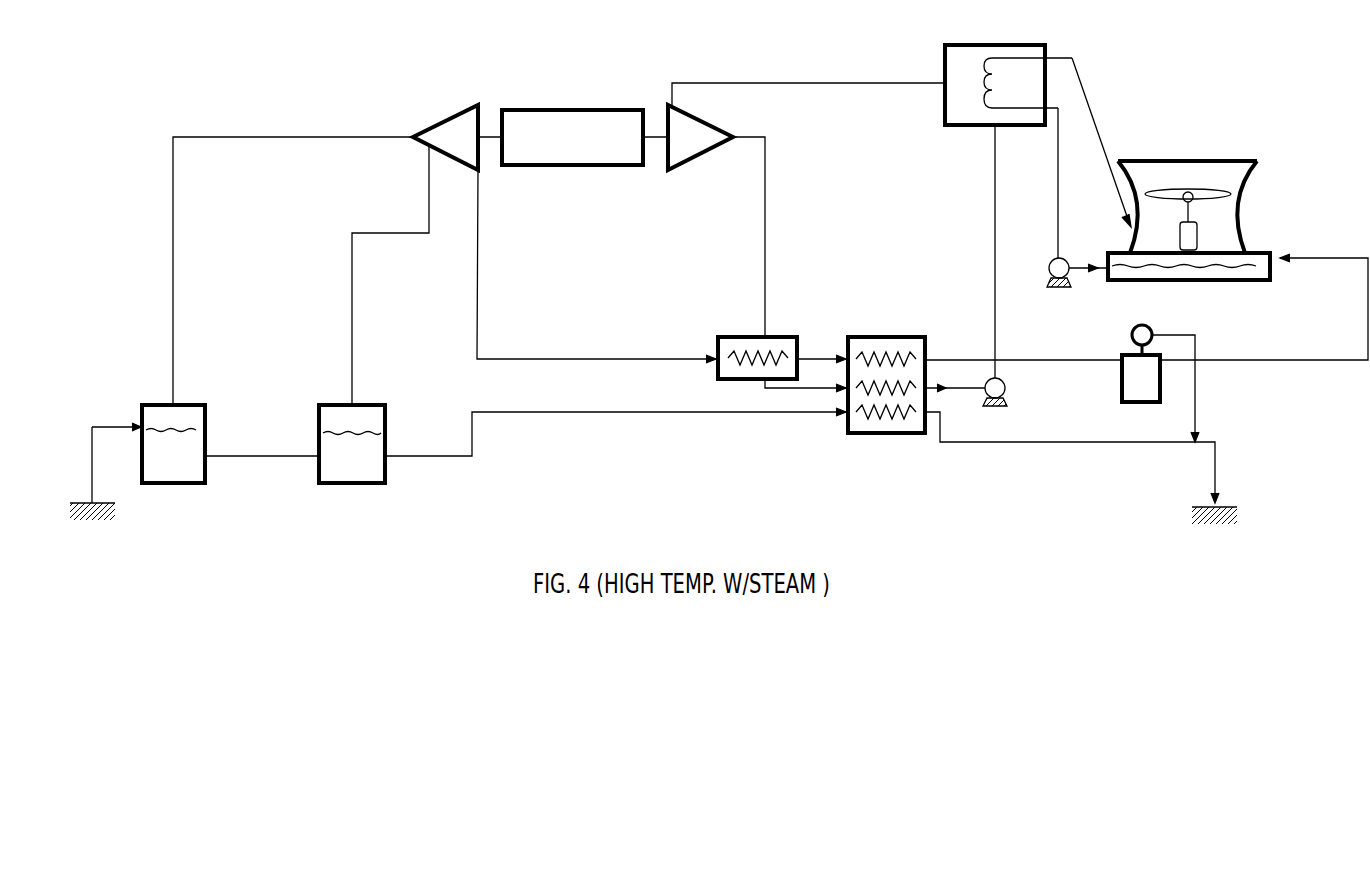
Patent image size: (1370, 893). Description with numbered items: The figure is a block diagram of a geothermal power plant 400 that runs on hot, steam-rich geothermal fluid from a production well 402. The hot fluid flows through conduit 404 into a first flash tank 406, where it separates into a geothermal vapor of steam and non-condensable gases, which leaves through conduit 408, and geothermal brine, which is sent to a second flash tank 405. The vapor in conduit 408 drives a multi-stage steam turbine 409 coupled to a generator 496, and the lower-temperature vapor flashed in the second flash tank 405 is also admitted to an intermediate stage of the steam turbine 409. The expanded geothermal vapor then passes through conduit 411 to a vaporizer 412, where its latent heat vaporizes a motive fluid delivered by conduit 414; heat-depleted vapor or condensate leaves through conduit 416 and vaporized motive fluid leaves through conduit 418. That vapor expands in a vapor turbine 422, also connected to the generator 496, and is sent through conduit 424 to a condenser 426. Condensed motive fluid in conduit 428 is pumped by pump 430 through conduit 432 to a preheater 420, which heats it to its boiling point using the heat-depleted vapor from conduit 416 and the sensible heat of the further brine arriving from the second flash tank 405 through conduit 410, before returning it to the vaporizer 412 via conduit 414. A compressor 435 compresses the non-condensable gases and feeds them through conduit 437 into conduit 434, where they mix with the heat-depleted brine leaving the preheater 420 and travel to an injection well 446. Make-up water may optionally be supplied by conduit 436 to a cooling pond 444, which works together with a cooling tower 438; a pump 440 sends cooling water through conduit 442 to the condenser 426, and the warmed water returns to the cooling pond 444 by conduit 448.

The power plant 400 is at (143, 150).
The production well 402 is at (97, 508).
The conduit 404 is at (92, 447).
The second flash tank 405 is at (385, 483).
The first flash tank 406 is at (205, 483).
The conduit 408 is at (172, 387).
The steam turbine 409 is at (428, 120).
The conduit 410 is at (540, 412).
The conduit 411 is at (540, 360).
The vaporizer 412 is at (720, 378).
The conduit 414 is at (798, 395).
The conduit 416 is at (805, 357).
The conduit 418 is at (766, 231).
The preheater 420 is at (885, 435).
The vapor turbine 422 is at (705, 152).
The conduit 424 is at (846, 83).
The condenser 426 is at (1045, 48).
The conduit 428 is at (997, 186).
The pump 430 is at (1007, 384).
The conduit 432 is at (958, 393).
The conduit 434 is at (1216, 470).
The compressor 435 is at (1130, 336).
The conduit 436 is at (1300, 262).
The conduit 437 is at (1197, 411).
The cooling tower 438 is at (1247, 195).
The pump 440 is at (1048, 265).
The conduit 442 is at (1060, 196).
The cooling pond 444 is at (1178, 282).
The injection well 446 is at (1225, 510).
The conduit 448 is at (1095, 123).
The generator 496 is at (553, 108).